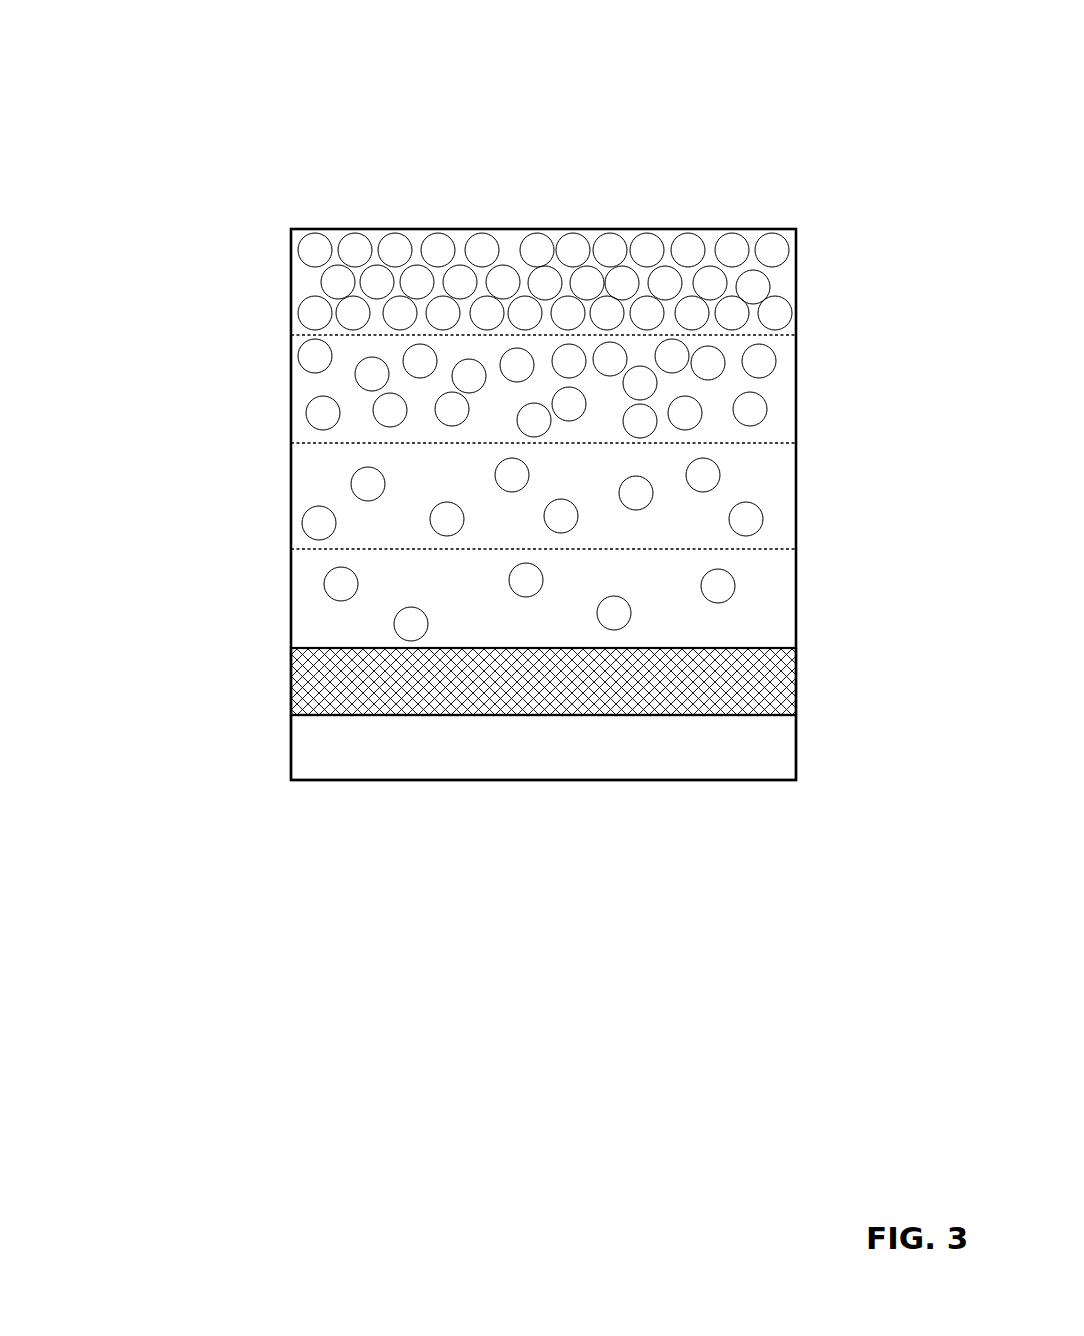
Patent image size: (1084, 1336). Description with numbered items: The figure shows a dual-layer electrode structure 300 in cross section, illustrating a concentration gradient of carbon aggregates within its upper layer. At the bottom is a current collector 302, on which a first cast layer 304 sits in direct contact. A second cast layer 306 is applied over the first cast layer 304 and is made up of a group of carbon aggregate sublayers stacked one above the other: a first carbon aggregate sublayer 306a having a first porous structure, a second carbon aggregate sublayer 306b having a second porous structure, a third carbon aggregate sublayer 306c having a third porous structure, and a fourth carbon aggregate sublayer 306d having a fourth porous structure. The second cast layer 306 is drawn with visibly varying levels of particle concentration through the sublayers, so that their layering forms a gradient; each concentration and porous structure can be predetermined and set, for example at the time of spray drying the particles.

The dual-layer electrode structure 300 is at (112, 93).
The current collector 302 is at (291, 765).
The first cast layer 304 is at (291, 693).
The second cast layer 306 is at (283, 651).
The first carbon aggregate sublayer 306a is at (797, 601).
The second carbon aggregate sublayer 306b is at (797, 497).
The third carbon aggregate sublayer 306c is at (797, 394).
The fourth carbon aggregate sublayer 306d is at (797, 283).